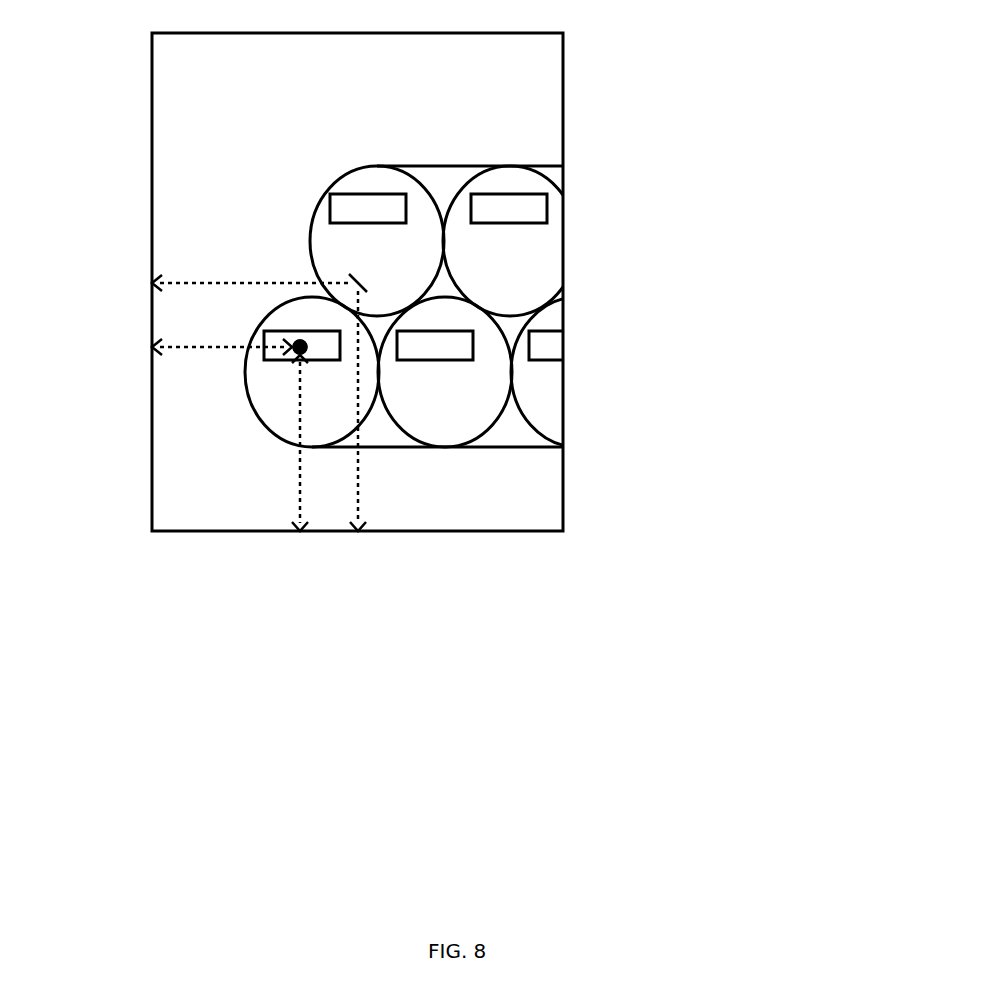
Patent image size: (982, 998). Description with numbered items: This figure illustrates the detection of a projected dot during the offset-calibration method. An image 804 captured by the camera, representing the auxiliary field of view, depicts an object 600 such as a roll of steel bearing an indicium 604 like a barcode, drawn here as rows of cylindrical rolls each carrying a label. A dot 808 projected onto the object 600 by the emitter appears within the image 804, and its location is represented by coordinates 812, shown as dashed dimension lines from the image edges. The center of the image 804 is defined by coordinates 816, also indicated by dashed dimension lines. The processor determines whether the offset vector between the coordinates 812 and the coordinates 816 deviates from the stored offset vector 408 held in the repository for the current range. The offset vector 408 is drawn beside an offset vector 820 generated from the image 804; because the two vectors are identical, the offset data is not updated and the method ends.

The image 804 is at (152, 122).
The object 600 is at (262, 425).
The indicium 604 is at (300, 333).
The dot 808 is at (306, 346).
The coordinates 812 is at (200, 348).
The coordinates 816 is at (195, 283).
The offset vector 408 is at (638, 173).
The offset vector 820 is at (640, 273).